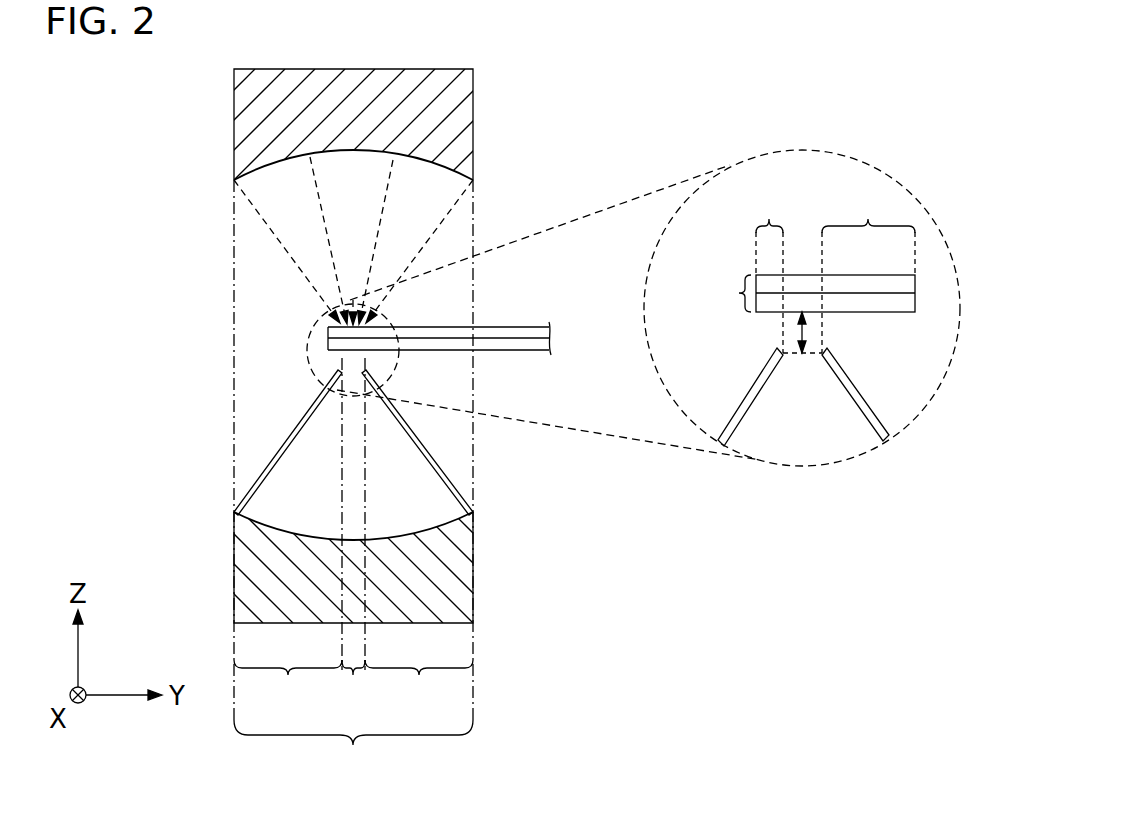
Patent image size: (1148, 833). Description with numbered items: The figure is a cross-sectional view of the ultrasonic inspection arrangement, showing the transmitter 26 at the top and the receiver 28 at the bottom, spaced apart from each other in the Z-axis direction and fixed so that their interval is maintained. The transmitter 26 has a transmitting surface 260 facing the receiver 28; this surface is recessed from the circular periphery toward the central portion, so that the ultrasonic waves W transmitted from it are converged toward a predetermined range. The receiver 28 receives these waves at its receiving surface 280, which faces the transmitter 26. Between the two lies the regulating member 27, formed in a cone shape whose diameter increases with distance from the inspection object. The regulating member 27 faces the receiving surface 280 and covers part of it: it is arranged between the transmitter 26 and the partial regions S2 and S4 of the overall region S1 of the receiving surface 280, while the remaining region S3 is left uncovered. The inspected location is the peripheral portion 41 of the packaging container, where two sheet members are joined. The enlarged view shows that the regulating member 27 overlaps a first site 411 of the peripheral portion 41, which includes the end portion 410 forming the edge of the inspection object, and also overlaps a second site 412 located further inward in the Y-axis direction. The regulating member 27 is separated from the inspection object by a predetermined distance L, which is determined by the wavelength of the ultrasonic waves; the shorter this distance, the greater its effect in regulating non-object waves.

The transmitter 26 is at (234, 118).
The transmitting surface 260 is at (437, 170).
The ultrasonic waves W is at (353, 241).
The peripheral portion 41 is at (497, 327).
The end portion 410 is at (718, 293).
The site 411 is at (766, 210).
The site 412 is at (868, 209).
The regulating member 27 is at (291, 432).
The receiver 28 is at (233, 575).
The receiving surface 280 is at (432, 526).
The distance L is at (798, 332).
The region S1 is at (353, 749).
The region S2 is at (288, 685).
The region S3 is at (336, 685).
The region S4 is at (419, 685).